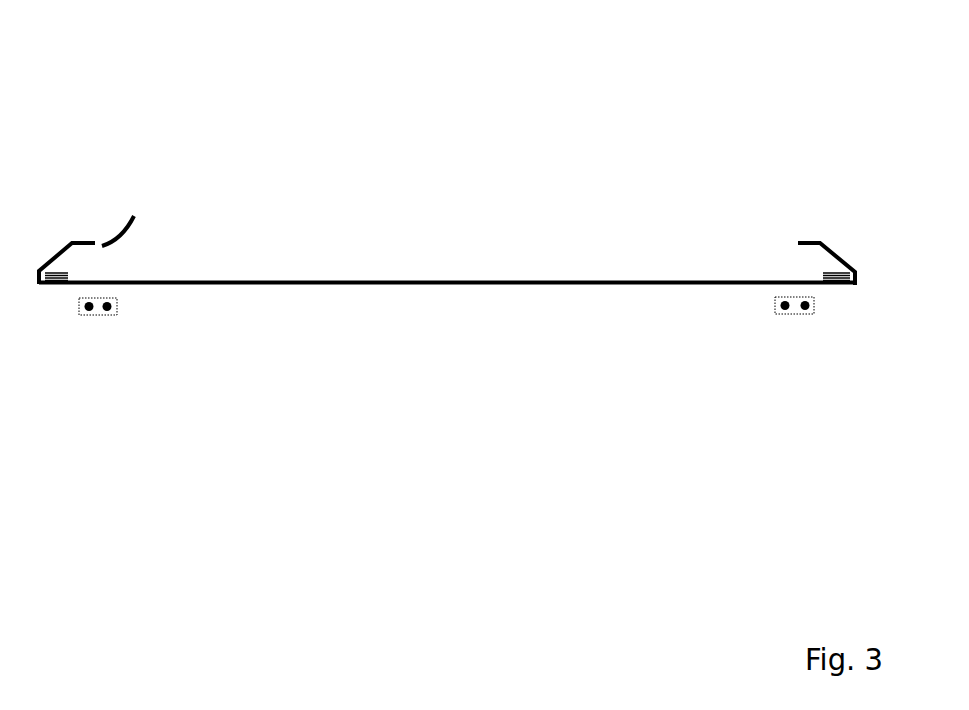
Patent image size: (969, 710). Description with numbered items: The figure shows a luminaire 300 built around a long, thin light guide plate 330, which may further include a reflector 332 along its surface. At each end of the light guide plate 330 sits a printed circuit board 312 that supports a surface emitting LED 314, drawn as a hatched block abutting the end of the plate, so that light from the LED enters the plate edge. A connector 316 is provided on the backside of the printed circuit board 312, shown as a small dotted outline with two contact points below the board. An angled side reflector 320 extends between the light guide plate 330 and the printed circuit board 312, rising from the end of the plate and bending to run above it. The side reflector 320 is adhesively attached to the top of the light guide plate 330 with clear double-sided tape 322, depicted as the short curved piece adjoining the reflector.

The luminaire 300 is at (165, 128).
The printed circuit board 312 is at (132, 294).
The surface emitting LED 314 is at (58, 289).
The connector 316 is at (105, 328).
The side reflector 320 is at (59, 236).
The clear double-sided tape 322 is at (136, 215).
The light guide plate 330 is at (458, 271).
The reflector 332 is at (561, 296).